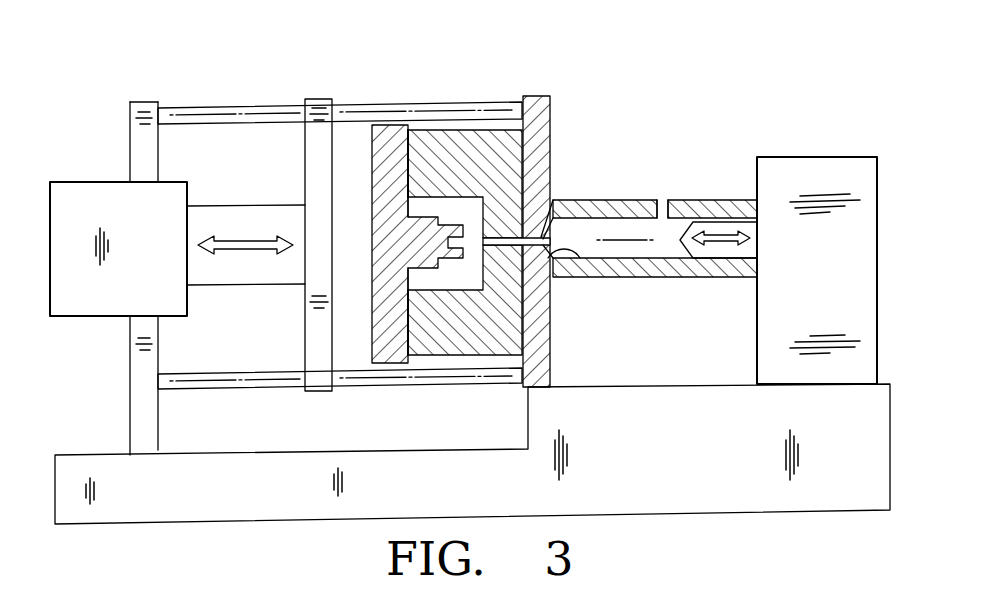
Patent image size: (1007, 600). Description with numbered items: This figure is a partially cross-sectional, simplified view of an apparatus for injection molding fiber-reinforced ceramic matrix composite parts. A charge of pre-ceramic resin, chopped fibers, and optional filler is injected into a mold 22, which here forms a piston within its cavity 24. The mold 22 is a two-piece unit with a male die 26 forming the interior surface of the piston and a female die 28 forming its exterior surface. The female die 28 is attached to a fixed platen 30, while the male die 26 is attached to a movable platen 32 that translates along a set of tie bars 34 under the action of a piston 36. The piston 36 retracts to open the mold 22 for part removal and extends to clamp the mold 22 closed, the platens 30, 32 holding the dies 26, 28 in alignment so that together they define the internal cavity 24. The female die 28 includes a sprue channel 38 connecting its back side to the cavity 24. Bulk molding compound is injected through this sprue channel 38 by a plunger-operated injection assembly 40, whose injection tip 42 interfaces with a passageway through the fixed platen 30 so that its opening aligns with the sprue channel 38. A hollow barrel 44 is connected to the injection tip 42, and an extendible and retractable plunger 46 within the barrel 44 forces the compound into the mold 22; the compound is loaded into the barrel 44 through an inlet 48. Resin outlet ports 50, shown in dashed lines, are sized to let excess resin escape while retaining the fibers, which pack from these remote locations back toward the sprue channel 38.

The mold 22 is at (354, 136).
The cavity 24 is at (472, 208).
The male die 26 is at (366, 124).
The female die 28 is at (473, 347).
The fixed platen 30 is at (531, 96).
The movable platen 32 is at (318, 391).
The tie bars 34 is at (236, 107).
The piston 36 is at (237, 218).
The sprue channel 38 is at (508, 236).
The injection assembly 40 is at (714, 176).
The injection tip 42 is at (583, 280).
The barrel 44 is at (647, 280).
The plunger 46 is at (710, 280).
The inlet 48 is at (661, 190).
The resin outlet ports 50 is at (412, 129).